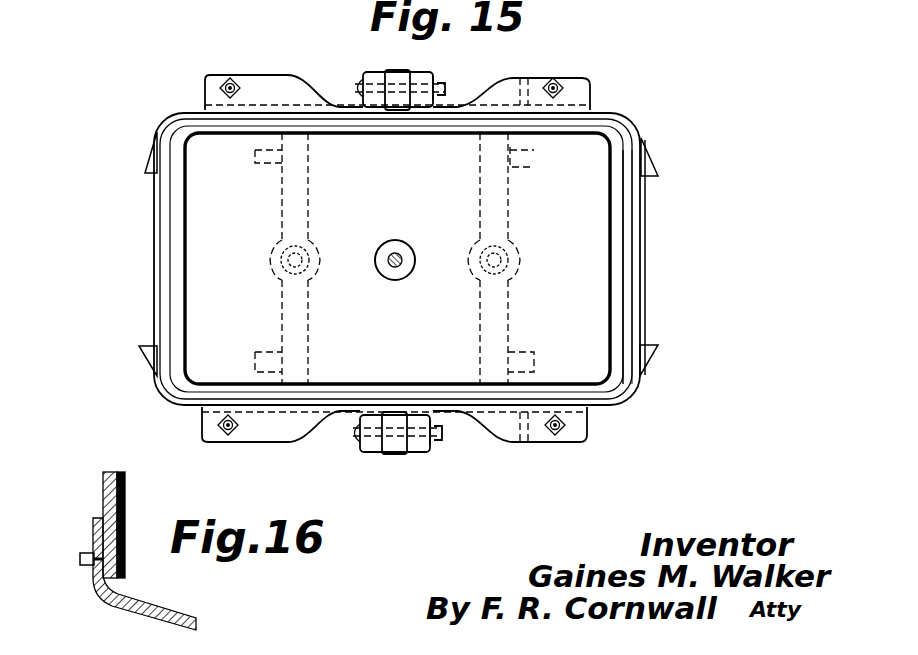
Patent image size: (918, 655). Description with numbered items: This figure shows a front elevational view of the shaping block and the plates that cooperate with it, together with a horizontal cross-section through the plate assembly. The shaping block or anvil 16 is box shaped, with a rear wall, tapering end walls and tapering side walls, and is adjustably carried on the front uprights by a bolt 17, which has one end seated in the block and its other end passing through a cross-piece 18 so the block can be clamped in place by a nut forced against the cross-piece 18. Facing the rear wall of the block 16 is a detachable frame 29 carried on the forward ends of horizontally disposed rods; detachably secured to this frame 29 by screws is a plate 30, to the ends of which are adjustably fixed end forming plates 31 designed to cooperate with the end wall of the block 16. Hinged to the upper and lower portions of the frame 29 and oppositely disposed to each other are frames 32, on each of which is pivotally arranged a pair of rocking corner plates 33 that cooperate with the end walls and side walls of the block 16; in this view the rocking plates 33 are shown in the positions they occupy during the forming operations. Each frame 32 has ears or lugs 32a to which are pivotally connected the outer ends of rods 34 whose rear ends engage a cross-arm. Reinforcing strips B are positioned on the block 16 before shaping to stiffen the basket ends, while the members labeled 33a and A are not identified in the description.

In FIG. 15, the shaping block 16 is at (222, 211).
In FIG. 15, the bolt 17 is at (400, 258).
In FIG. 15, the cross-piece 18 is at (490, 262).
In FIG. 16, the detachable frame 29 is at (103, 490).
In FIG. 16, the plate 30 is at (126, 500).
In FIG. 16, the end forming plates 31 is at (100, 604).
In FIG. 15, the frames 32 is at (478, 105).
In FIG. 15, the ears or lugs 32a is at (362, 447).
In FIG. 15, the rocking corner plates 33 is at (162, 128).
In FIG. 15, the tabs 33a is at (150, 162).
In FIG. 15, the rods 34 is at (398, 84).
In FIG. 15, the frame member A is at (630, 297).
In FIG. 15, the reinforcing strips B is at (623, 200).